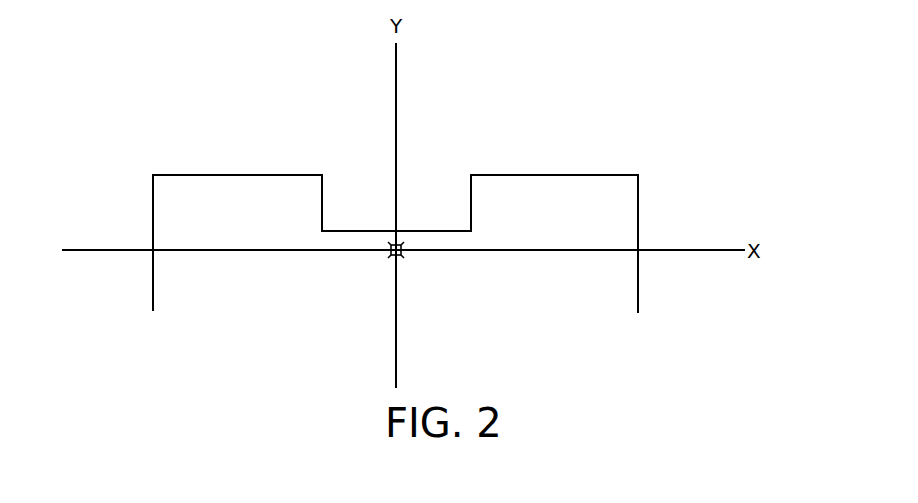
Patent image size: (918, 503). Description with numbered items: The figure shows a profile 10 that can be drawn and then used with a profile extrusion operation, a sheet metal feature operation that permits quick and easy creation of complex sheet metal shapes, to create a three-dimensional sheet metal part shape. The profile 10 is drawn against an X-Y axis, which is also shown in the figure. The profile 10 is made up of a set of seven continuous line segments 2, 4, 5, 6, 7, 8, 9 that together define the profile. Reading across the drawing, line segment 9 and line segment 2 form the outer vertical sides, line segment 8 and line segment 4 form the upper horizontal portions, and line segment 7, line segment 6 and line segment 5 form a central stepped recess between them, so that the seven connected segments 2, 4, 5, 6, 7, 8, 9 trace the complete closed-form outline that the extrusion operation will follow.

The line segment 2 is at (638, 229).
The line segment 4 is at (552, 175).
The line segment 5 is at (471, 210).
The line segment 6 is at (407, 231).
The line segment 7 is at (322, 193).
The line segment 8 is at (238, 175).
The line segment 9 is at (153, 225).
The profile 10 is at (533, 109).